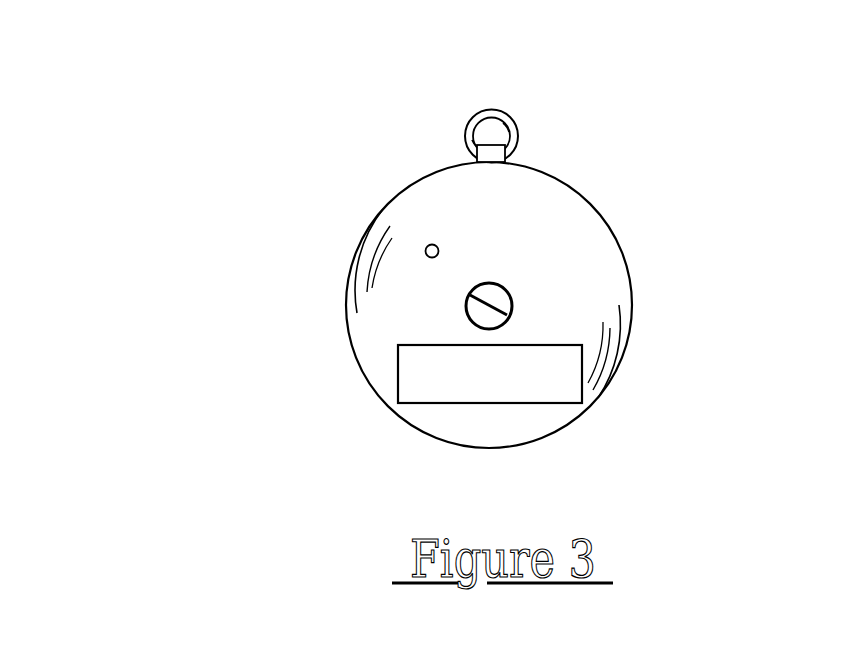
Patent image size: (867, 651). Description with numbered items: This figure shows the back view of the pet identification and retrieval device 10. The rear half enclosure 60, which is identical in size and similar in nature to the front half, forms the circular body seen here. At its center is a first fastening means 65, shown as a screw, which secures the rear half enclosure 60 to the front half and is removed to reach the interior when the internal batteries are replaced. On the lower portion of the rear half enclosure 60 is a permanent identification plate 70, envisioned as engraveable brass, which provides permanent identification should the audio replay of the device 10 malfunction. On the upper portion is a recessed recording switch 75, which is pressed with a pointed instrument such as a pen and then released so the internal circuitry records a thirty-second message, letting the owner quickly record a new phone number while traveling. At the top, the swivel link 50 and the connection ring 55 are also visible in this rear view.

The pet identification and retrieval device 10 is at (401, 263).
The swivel link 50 is at (493, 155).
The connection ring 55 is at (473, 122).
The rear half enclosure 60 is at (603, 289).
The first fastening means 65 is at (500, 299).
The permanent identification plate 70 is at (457, 383).
The recessed recording switch 75 is at (425, 248).